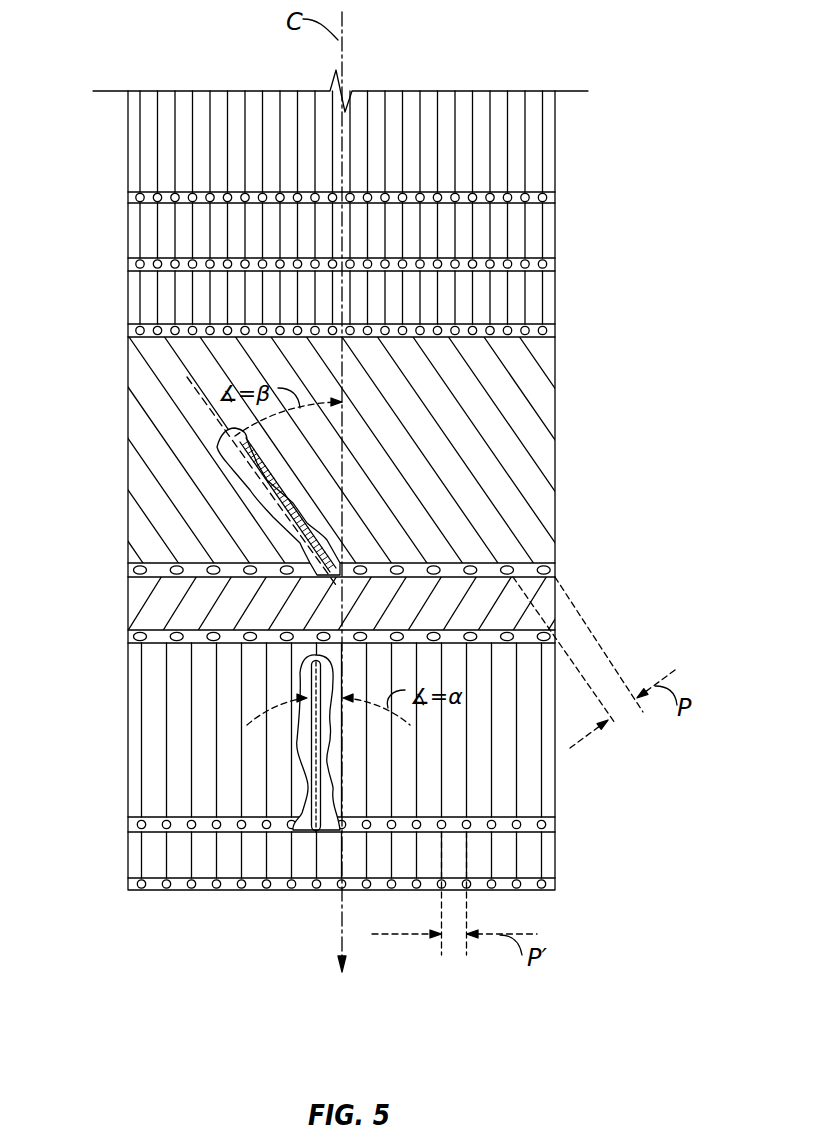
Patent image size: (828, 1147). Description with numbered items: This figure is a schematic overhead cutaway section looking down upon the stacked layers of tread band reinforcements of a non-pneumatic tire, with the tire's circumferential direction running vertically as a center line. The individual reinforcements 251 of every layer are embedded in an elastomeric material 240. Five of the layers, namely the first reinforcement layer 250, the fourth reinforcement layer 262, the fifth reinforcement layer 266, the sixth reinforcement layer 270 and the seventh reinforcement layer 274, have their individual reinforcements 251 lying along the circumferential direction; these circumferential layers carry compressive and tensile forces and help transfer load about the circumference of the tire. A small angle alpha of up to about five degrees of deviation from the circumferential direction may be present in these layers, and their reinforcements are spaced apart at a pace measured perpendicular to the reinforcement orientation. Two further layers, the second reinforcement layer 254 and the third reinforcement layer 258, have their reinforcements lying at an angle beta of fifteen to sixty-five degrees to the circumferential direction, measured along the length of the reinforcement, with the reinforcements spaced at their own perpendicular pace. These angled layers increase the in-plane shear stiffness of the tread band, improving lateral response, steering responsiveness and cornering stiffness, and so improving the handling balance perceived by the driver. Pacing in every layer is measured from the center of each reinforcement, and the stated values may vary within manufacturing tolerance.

The elastomeric material 240 is at (148, 888).
The first reinforcement layer 250 is at (552, 752).
The individual reinforcements 251 is at (513, 884).
The second reinforcement layer 254 is at (128, 600).
The third reinforcement layer 258 is at (128, 442).
The fourth reinforcement layer 262 is at (128, 302).
The fifth reinforcement layer 266 is at (128, 226).
The sixth reinforcement layer 270 is at (552, 843).
The seventh reinforcement layer 274 is at (128, 148).